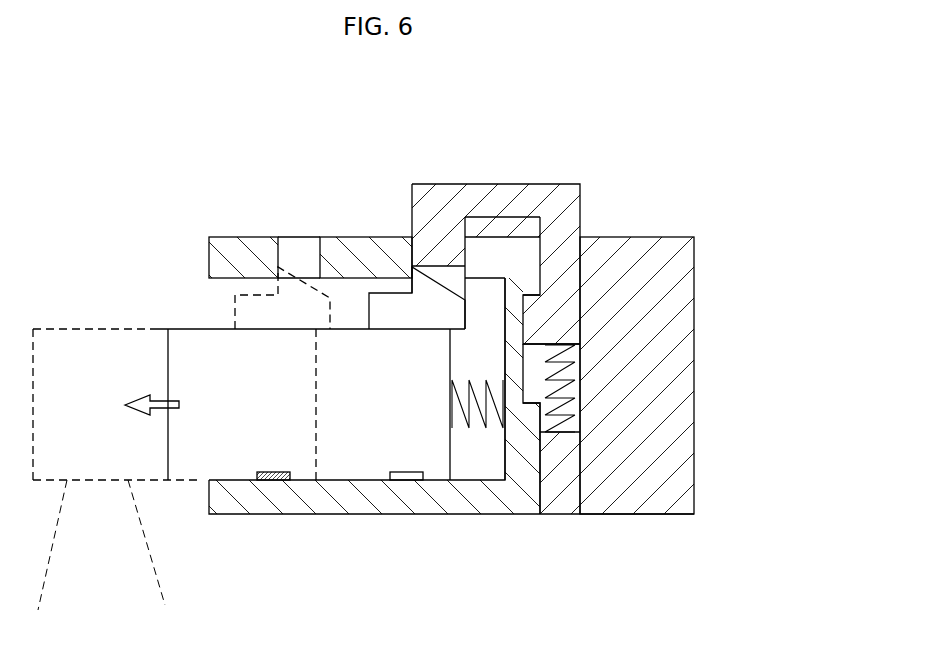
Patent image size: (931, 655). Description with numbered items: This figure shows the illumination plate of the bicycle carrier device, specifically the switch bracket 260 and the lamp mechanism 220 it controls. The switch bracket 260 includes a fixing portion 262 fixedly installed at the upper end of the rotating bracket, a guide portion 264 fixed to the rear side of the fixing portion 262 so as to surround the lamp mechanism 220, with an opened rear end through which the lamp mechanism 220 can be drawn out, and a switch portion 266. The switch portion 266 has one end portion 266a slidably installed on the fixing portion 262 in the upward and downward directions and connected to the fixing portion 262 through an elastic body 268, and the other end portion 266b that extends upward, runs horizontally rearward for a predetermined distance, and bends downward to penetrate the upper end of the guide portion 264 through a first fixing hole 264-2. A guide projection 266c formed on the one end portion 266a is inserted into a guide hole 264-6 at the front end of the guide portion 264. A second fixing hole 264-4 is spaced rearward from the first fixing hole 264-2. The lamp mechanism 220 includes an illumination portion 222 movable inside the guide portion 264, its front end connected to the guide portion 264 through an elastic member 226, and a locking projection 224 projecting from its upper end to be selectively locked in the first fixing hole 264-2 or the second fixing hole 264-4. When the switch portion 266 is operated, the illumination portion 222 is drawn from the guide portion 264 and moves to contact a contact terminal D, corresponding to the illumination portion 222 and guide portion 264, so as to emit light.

The lamp mechanism 220 is at (97, 222).
The illumination portion 222 is at (177, 355).
The locking projection 224 is at (387, 310).
The elastic member 226 is at (485, 428).
The switch bracket 260 is at (607, 188).
The fixing portion 262 is at (678, 432).
The guide portion 264 is at (451, 456).
The first fixing hole 264-2 is at (452, 276).
The second fixing hole 264-4 is at (300, 248).
The guide hole 264-6 is at (533, 378).
The switch portion 266 is at (596, 290).
The one end portion 266a is at (565, 317).
The other end portion 266b is at (440, 218).
The guide projection 266c is at (528, 318).
The elastic body 268 is at (568, 434).
The contact terminal D is at (272, 483).